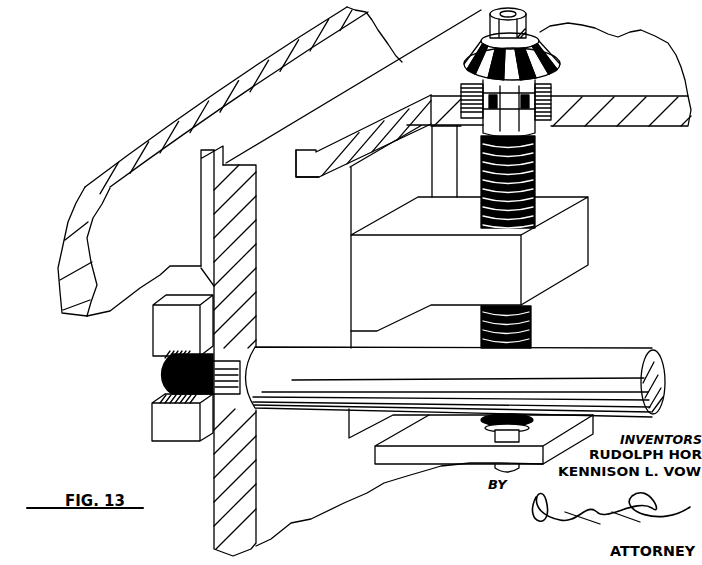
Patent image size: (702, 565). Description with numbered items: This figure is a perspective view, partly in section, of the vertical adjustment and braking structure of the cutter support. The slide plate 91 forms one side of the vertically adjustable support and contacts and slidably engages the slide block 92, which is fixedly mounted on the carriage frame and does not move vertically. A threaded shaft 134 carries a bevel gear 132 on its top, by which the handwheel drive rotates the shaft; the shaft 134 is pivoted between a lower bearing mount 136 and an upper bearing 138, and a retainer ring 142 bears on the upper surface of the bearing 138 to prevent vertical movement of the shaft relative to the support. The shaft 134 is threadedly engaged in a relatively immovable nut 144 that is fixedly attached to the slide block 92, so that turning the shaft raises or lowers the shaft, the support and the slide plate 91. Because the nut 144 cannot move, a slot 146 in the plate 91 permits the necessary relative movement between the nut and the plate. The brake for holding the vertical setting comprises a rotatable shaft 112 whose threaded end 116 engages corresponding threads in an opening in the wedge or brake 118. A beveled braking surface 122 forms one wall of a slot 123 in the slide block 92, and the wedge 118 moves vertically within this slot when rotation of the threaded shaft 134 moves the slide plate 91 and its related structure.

The slide plate 91 is at (274, 147).
The slide block 92 is at (247, 68).
The rotatable shaft 112 is at (601, 348).
The threaded end 116 is at (165, 358).
The wedge or brake 118 is at (152, 423).
The beveled braking surface 122 is at (236, 256).
The slot 123 is at (199, 163).
The bevel gear 132 is at (549, 45).
The threaded shaft 134 is at (536, 165).
The bearing mount 136 is at (464, 470).
The bearing mount 138 is at (540, 124).
The retainer ring 142 is at (551, 83).
The nut 144 is at (578, 232).
The slot 146 is at (328, 176).